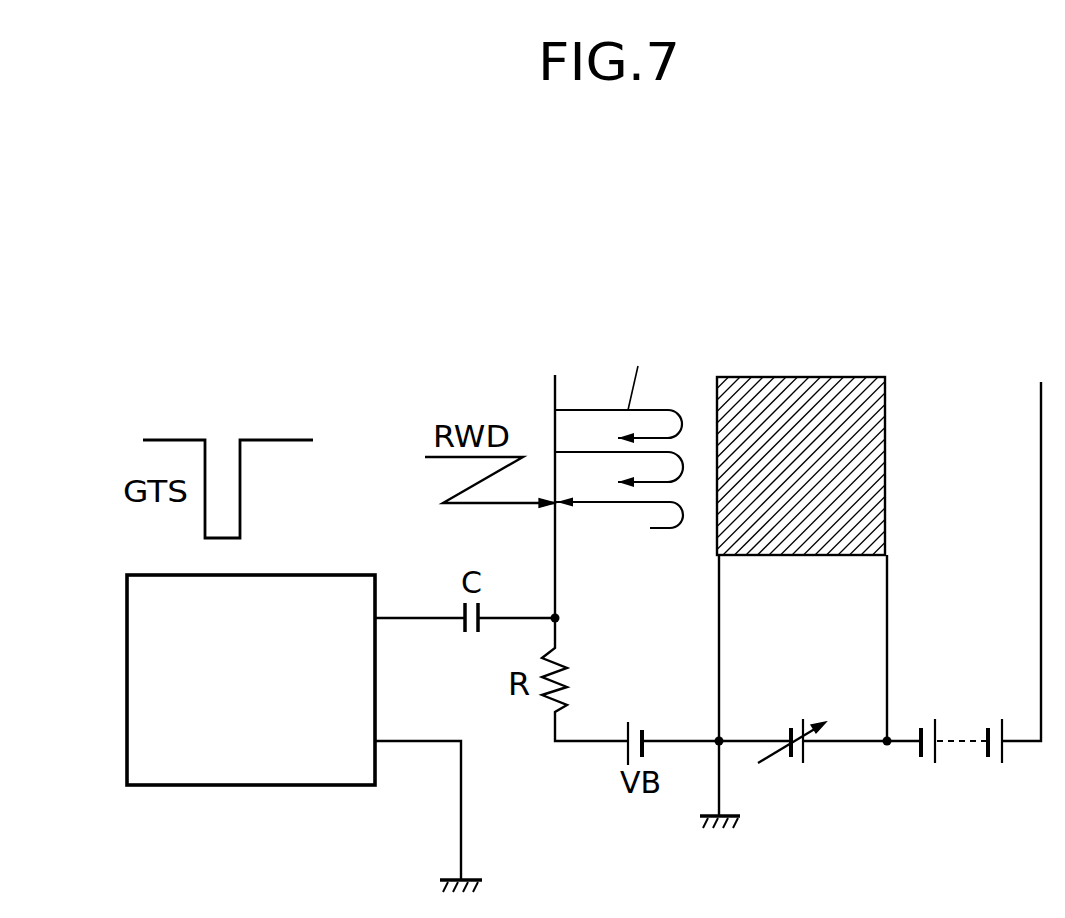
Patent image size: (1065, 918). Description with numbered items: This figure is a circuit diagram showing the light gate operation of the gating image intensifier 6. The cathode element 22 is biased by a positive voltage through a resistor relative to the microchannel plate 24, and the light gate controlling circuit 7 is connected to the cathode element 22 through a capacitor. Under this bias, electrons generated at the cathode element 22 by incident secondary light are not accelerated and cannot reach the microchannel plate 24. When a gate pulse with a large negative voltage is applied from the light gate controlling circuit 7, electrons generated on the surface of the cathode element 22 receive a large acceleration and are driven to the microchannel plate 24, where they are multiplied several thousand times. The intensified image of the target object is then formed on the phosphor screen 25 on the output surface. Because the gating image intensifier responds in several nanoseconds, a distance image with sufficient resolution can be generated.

The image intensifier 6 is at (754, 312).
The light gate controlling circuit 7 is at (227, 786).
The cathode element 22 is at (555, 390).
The microchannel plate 24 is at (818, 377).
The phosphor screen 25 is at (1028, 542).